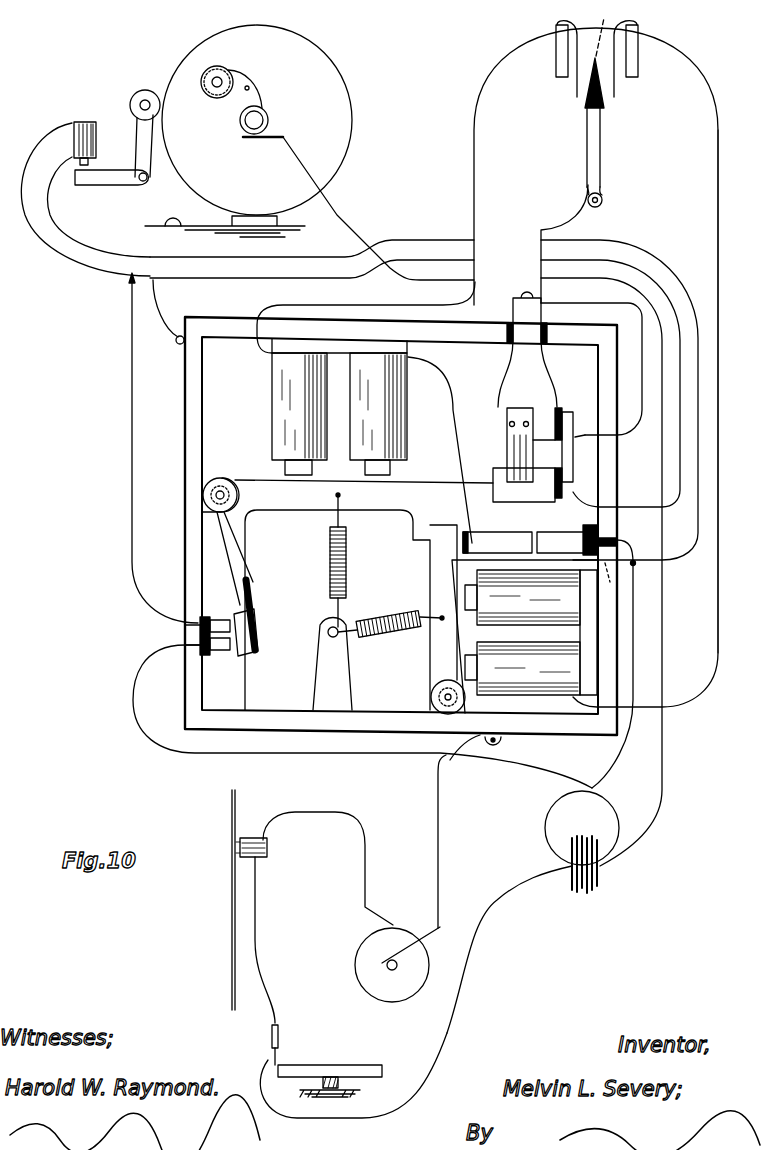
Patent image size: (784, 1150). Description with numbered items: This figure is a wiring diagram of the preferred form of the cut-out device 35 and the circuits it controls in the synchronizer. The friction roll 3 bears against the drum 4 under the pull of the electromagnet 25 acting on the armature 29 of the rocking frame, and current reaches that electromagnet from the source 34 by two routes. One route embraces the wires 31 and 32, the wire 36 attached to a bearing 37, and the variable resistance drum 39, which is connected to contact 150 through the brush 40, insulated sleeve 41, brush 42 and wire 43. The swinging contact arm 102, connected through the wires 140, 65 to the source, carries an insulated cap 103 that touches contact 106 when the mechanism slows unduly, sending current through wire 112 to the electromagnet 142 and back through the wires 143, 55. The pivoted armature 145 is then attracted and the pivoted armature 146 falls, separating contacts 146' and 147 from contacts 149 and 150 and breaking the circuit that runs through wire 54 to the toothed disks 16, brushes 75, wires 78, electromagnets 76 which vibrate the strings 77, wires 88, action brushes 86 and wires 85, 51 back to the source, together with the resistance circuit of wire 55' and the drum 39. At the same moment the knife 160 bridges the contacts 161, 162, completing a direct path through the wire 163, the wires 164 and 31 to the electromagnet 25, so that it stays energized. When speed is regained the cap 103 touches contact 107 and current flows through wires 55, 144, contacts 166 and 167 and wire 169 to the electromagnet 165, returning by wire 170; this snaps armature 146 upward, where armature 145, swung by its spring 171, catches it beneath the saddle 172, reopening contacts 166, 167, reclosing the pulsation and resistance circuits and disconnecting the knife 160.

The roll 3 is at (132, 92).
The drum 4 is at (348, 85).
The electromagnet 25 is at (96, 140).
The armature 29 is at (88, 183).
The wire 31 is at (78, 270).
The wire 32 is at (120, 256).
The cut-out device 35 is at (185, 429).
The wire 36 is at (162, 302).
The bearing 37 is at (220, 221).
The variable resistance drum 39 is at (207, 96).
The brush 40 is at (245, 70).
The insulated sleeve 41 is at (270, 118).
The brush 42 is at (271, 142).
The wire 43 is at (338, 225).
The wire 51 is at (483, 940).
The wire 54 is at (440, 826).
The wire 55 is at (559, 827).
The wire 55' is at (645, 675).
The wire 65 is at (662, 775).
The brush 75 is at (378, 918).
The electromagnet 76 is at (268, 850).
The string 77 is at (230, 915).
The wire 78 is at (366, 848).
The wire 85 is at (445, 1036).
The action brush 86 is at (278, 1040).
The wire 88 is at (262, 942).
The toothed disk 16 is at (370, 993).
The current source 34 is at (586, 892).
The swinging contact arm 102 is at (601, 140).
The cap 103 is at (612, 28).
The contact 106 is at (616, 92).
The contact 107 is at (572, 90).
The wire 112 is at (716, 182).
The wire 140 is at (546, 212).
The electromagnet 142 is at (556, 690).
The wire 143 is at (614, 584).
The wire 144 is at (632, 540).
The pivoted armature 145 is at (436, 656).
The pivoted armature 146 is at (354, 601).
The contact 146' is at (511, 471).
The contact 147 is at (573, 478).
The contact 149 is at (507, 431).
The contact 150 is at (573, 450).
The knife 160 is at (250, 652).
The contact 161 is at (222, 652).
The contact 162 is at (220, 622).
The wire 163 is at (332, 756).
The wire 164 is at (131, 468).
The electromagnet 165 is at (272, 405).
The contact 166 is at (558, 540).
The contact 167 is at (505, 540).
The wire 169 is at (454, 425).
The wire 170 is at (474, 142).
The spring 171 is at (386, 616).
The saddle 172 is at (410, 543).